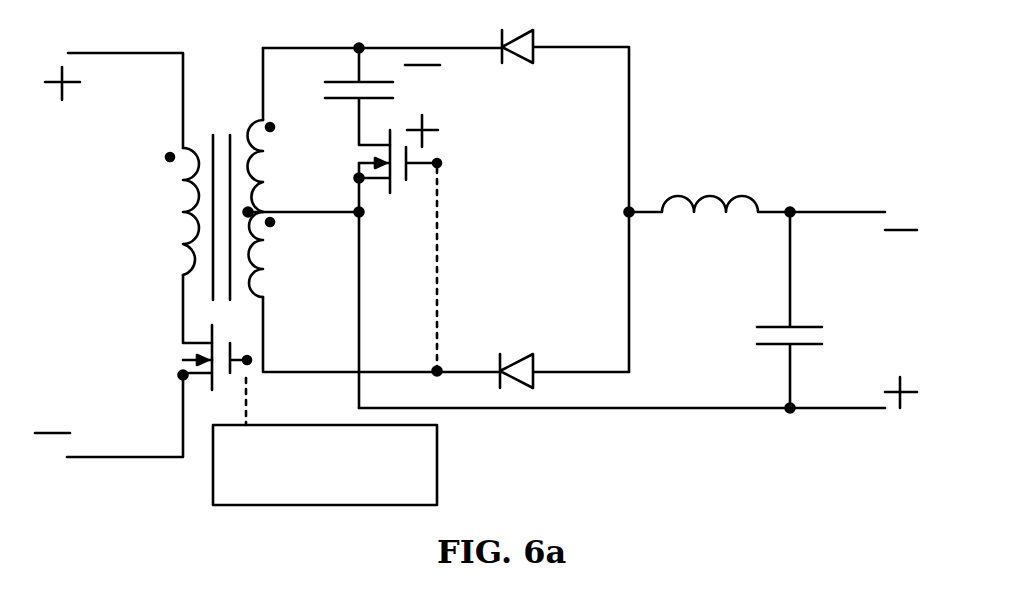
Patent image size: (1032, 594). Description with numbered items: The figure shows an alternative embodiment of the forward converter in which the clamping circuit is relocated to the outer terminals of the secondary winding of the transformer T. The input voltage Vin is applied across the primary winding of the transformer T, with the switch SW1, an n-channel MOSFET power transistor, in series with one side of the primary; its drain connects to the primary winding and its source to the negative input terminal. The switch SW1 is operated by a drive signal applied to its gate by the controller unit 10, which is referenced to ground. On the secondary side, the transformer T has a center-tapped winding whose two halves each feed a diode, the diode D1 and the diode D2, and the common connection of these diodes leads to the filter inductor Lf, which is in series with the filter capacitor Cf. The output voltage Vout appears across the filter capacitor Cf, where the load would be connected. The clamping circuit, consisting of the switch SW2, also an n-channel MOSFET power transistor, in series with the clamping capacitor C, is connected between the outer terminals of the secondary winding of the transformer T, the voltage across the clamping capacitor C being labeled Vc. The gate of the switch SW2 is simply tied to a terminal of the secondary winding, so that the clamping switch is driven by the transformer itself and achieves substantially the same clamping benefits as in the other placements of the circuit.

The controller unit 10 is at (437, 473).
The switch SW1 is at (180, 375).
The switch SW2 is at (429, 269).
The diode D1 is at (564, 359).
The diode D2 is at (565, 201).
The clamping capacitor C is at (382, 95).
The transformer T is at (321, 210).
The filter inductor Lf is at (755, 224).
The filter capacitor Cf is at (764, 310).
The input voltage Vin is at (109, 255).
The output voltage Vout is at (639, 319).
The clamping capacitor voltage Vc is at (422, 106).